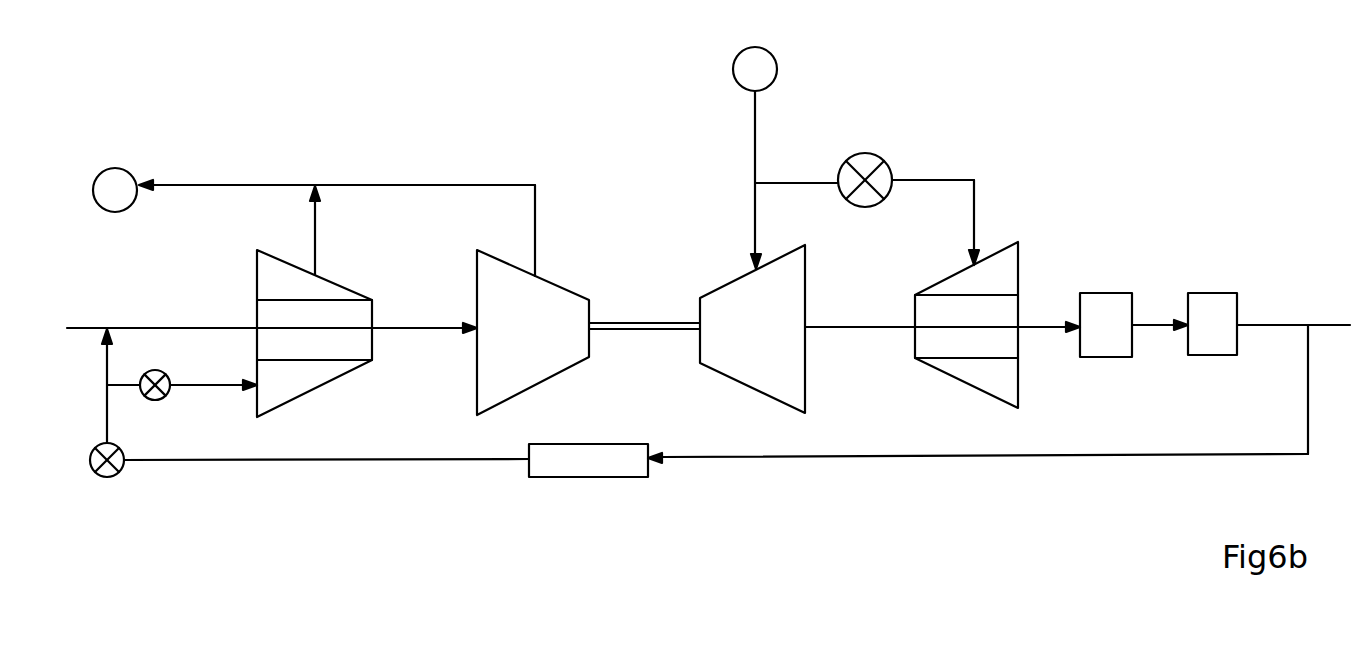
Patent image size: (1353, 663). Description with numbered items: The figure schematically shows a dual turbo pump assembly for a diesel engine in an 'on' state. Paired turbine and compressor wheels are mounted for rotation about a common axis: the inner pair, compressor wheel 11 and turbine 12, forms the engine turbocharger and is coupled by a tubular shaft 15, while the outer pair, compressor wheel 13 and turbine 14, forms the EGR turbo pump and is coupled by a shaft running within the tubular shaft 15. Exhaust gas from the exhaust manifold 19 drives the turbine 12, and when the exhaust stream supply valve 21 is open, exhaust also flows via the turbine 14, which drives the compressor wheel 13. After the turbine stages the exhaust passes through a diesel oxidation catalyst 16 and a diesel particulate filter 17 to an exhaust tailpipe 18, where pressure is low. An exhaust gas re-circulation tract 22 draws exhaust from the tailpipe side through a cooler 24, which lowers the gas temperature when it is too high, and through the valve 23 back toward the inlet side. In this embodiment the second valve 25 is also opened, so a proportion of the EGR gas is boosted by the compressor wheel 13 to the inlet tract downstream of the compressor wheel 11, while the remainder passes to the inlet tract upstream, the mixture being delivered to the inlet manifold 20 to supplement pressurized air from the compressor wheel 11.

The compressor wheel 11 is at (577, 292).
The turbine 12 is at (729, 283).
The compressor wheel 13 is at (355, 297).
The turbine 14 is at (950, 278).
The tubular shaft 15 is at (660, 320).
The diesel oxidation catalyst 16 is at (1118, 292).
The diesel particulate filter 17 is at (1218, 292).
The exhaust tailpipe 18 is at (1333, 322).
The exhaust manifold 19 is at (755, 158).
The inlet manifold 20 is at (314, 222).
The exhaust stream supply valve 21 is at (882, 165).
The exhaust gas re-circulation tract 22 is at (980, 458).
The valve 23 is at (92, 470).
The cooler 24 is at (578, 470).
The second valve 25 is at (167, 372).